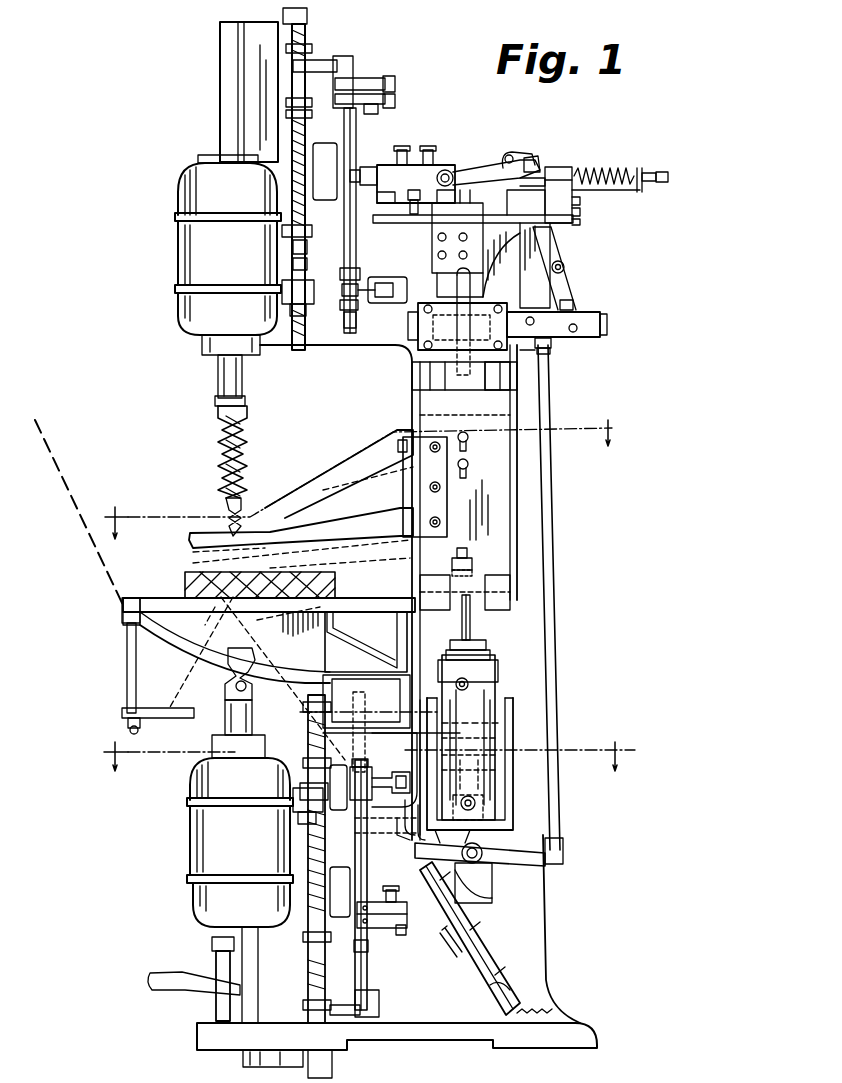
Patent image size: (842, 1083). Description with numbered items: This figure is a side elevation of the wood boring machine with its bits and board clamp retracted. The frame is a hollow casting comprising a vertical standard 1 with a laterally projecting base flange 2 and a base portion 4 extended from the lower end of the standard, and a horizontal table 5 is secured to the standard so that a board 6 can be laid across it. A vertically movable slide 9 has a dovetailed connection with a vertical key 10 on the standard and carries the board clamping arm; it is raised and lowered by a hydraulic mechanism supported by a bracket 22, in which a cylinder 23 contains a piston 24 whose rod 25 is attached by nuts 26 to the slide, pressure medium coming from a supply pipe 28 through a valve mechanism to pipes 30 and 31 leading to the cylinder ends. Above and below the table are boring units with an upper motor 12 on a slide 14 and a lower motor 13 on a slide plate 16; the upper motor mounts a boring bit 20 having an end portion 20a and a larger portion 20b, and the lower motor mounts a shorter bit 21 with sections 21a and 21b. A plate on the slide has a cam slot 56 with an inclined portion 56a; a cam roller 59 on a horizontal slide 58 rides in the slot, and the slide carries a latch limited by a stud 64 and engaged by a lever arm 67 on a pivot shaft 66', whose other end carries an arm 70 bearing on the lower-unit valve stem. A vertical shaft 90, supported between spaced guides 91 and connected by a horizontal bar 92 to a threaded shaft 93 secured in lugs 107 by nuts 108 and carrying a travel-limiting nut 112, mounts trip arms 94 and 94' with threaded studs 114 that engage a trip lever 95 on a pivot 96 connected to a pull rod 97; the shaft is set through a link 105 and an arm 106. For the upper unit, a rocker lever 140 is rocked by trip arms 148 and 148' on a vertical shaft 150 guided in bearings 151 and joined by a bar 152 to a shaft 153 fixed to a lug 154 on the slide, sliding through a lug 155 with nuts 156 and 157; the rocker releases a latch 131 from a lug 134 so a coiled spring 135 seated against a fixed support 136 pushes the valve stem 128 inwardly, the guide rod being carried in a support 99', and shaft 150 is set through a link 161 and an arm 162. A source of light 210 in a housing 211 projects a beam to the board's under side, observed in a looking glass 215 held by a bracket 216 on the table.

The vertical standard 1 is at (520, 648).
The base flange 2 is at (585, 1022).
The base portion 4 is at (356, 571).
The horizontal table 5 is at (225, 600).
The board 6 is at (185, 580).
The vertically movable slide 9 is at (500, 457).
The vertical key 10 is at (520, 388).
The upper motor 12 is at (178, 205).
The lower motor 13 is at (192, 880).
The slide 14 is at (226, 128).
The slide plate 16 is at (240, 955).
The upper wood boring bit 20 is at (216, 388).
The end portion of upper bit 20a is at (226, 506).
The larger diameter portion of upper bit 20b is at (205, 452).
The lower wood boring bit 21 is at (228, 692).
The end portion of lower bit 21a is at (262, 628).
The larger diameter portion of lower bit 21b is at (272, 660).
The bracket 22 is at (515, 778).
The cylinder 23 is at (495, 700).
The piston 24 is at (500, 723).
The piston rod 25 is at (478, 628).
The nuts 26 is at (470, 565).
The supply pipe 28 is at (413, 213).
The pipe 30 is at (470, 686).
The pipe 31 is at (478, 802).
The cam slot 56 is at (412, 366).
The inclined portion of cam slot 56a is at (540, 352).
The horizontal slide 58 is at (595, 330).
The cam roller 59 is at (470, 325).
The stud 64 is at (531, 318).
The pivot shaft 66' is at (591, 265).
The lever arm 67 is at (578, 288).
The upwardly extended arm 70 is at (575, 243).
The vertical shaft 90 is at (364, 949).
The spaced guides 91 is at (362, 772).
The horizontal bar 92 is at (380, 1000).
The threaded shaft 93 is at (368, 960).
The trip arm 94 is at (382, 893).
The trip arm 94' is at (401, 937).
The trip lever 95 is at (492, 905).
The pivot 96 is at (485, 860).
The pull rod 97 is at (555, 554).
The support 99' is at (600, 211).
The link 105 is at (380, 778).
The arm 106 is at (392, 810).
The lugs 107 is at (300, 806).
The nuts 108 is at (292, 796).
The nut 112 is at (306, 945).
The threaded studs 114 is at (394, 898).
The valve stem 128 is at (556, 170).
The latch 131 is at (518, 155).
The lug 134 is at (532, 158).
The coiled spring 135 is at (600, 170).
The fixed support 136 is at (645, 190).
The rocker lever 140 is at (415, 168).
The trip arm 148 is at (402, 102).
The trip arm 148' is at (377, 79).
The vertical shaft 150 is at (357, 131).
The guide bearings 151 is at (360, 282).
The bar 152 is at (328, 62).
The shaft 153 is at (310, 46).
The lug 154 is at (284, 298).
The lug 155 is at (292, 236).
The nut 156 is at (305, 110).
The nut 157 is at (292, 253).
The link 161 is at (400, 282).
The arm 162 is at (358, 300).
The source of light 210 is at (500, 968).
The housing 211 is at (475, 955).
The looking glass 215 is at (124, 708).
The bracket 216 is at (126, 656).